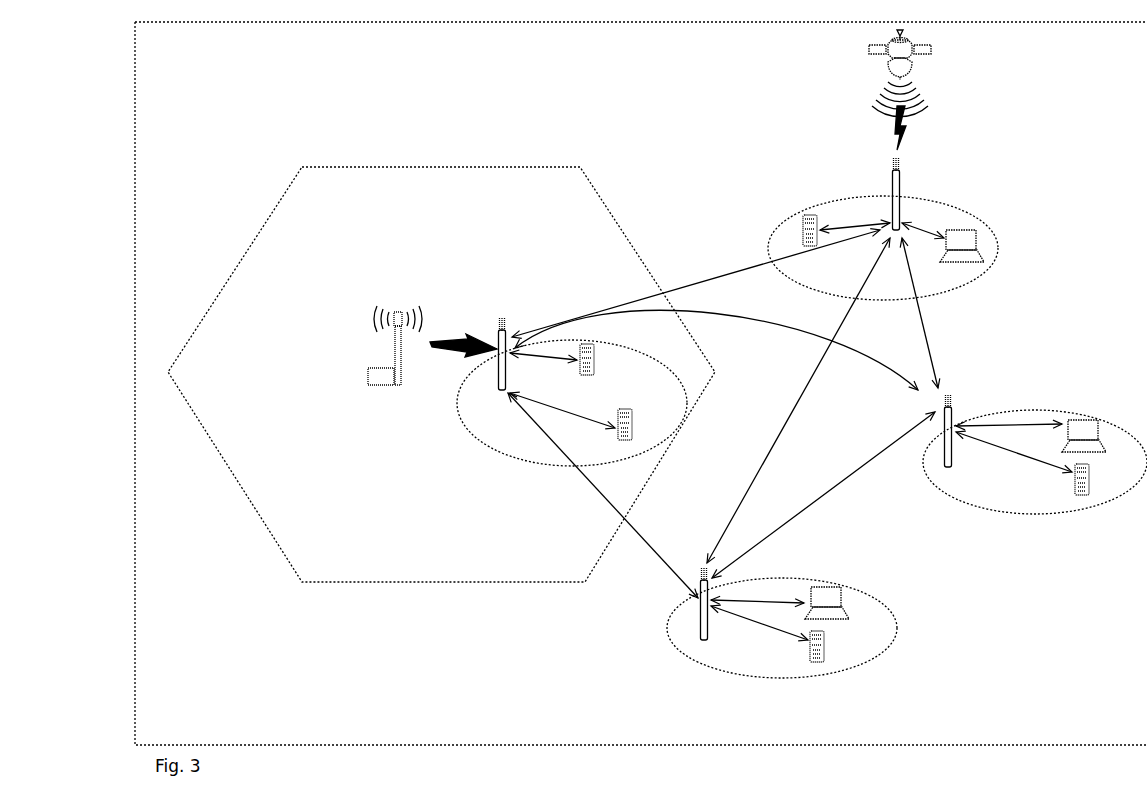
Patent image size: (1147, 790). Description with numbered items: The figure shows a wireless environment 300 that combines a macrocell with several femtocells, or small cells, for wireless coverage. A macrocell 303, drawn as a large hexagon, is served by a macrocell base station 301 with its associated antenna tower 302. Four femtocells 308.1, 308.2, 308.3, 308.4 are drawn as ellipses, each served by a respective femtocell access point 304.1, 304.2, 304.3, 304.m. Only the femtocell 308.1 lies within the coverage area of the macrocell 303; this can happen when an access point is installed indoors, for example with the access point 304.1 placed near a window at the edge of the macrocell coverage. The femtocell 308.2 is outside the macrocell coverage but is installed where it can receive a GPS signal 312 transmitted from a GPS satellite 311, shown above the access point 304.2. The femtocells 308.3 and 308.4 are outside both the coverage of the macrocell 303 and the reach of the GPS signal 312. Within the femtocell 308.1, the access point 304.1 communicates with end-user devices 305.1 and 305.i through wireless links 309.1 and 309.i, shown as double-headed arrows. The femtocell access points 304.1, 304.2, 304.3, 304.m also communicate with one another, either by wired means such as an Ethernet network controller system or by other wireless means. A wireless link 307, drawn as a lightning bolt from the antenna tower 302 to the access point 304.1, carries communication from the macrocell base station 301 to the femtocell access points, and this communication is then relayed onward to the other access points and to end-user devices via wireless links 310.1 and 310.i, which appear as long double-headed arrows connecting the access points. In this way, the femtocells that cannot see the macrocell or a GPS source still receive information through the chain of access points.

The wireless environment 300 is at (242, 76).
The macrocell base station 301 is at (374, 380).
The antenna tower 302 is at (392, 347).
The macrocell 303 is at (297, 590).
The femtocell access point 304.1 is at (511, 318).
The femtocell access point 304.2 is at (890, 181).
The femtocell access point 304.3 is at (698, 601).
The femtocell access point 304.m is at (958, 413).
The end-user device 305.1 is at (598, 356).
The end-user device 305.i is at (634, 432).
The wireless link 307 is at (453, 336).
The femtocell 308.1 is at (482, 456).
The femtocell 308.2 is at (770, 253).
The femtocell 308.3 is at (661, 628).
The femtocell 308.4 is at (1038, 514).
The wireless link 309.1 is at (545, 358).
The wireless link 309.i is at (562, 418).
The wireless link 310.1 is at (597, 498).
The wireless link 310.i is at (828, 498).
The GPS satellite 311 is at (928, 70).
The GPS signal 312 is at (906, 130).